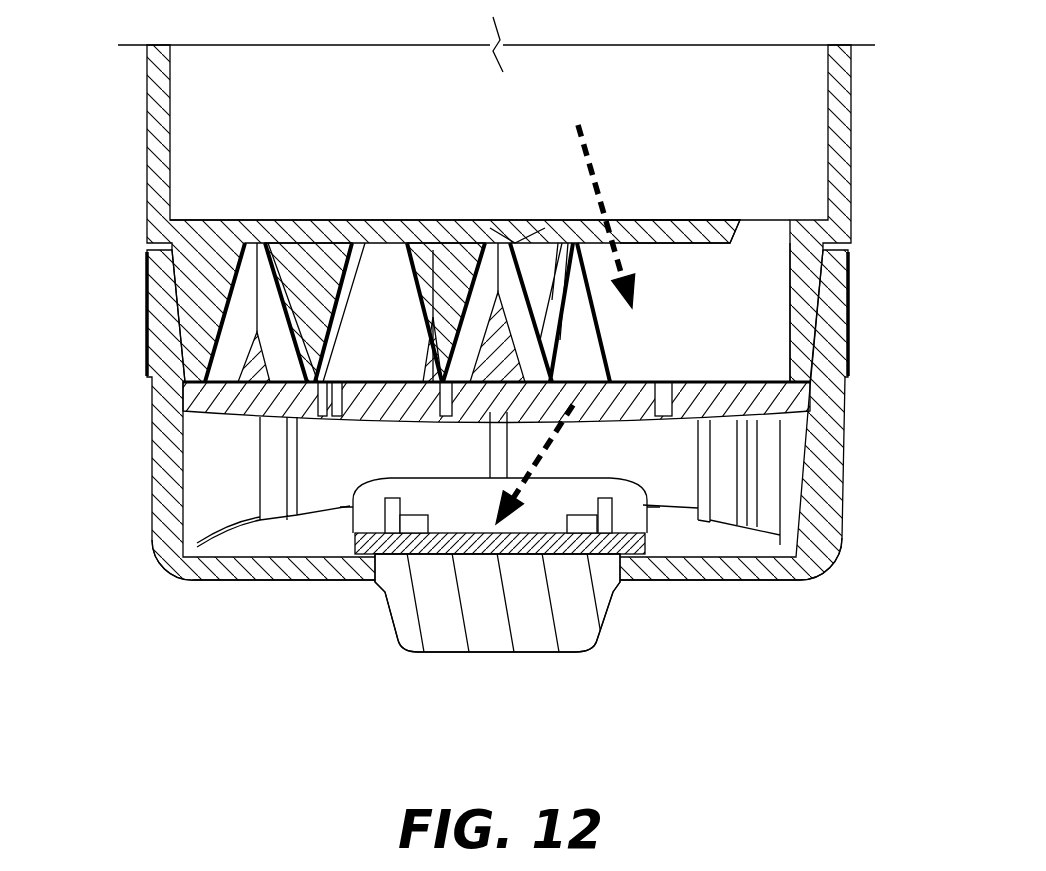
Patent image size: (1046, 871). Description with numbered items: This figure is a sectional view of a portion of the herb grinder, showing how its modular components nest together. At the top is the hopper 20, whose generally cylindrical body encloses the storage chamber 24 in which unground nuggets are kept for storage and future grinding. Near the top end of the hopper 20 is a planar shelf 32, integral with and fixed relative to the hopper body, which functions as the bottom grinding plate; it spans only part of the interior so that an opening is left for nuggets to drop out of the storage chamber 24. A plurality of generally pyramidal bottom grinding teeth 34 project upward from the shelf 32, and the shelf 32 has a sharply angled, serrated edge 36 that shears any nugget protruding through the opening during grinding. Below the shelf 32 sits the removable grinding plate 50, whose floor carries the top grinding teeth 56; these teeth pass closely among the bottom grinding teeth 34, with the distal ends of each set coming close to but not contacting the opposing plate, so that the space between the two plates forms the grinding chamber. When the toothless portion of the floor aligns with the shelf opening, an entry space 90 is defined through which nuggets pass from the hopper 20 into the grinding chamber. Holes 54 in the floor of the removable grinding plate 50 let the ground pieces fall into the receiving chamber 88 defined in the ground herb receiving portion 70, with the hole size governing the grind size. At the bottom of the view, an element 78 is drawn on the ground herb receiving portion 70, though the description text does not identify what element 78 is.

The hopper 20 is at (163, 140).
The storage chamber 24 is at (780, 82).
The shelf 32 is at (256, 235).
The bottom grinding teeth 34 is at (310, 268).
The edge 36 is at (675, 230).
The top grinding teeth 56 is at (225, 357).
The receiving chamber 88 is at (230, 490).
The entry space 90 is at (760, 300).
The removable grinding plate 50 is at (800, 397).
The ground herb receiving portion 70 is at (845, 498).
The holes 54 is at (403, 412).
The plug 78 is at (585, 622).